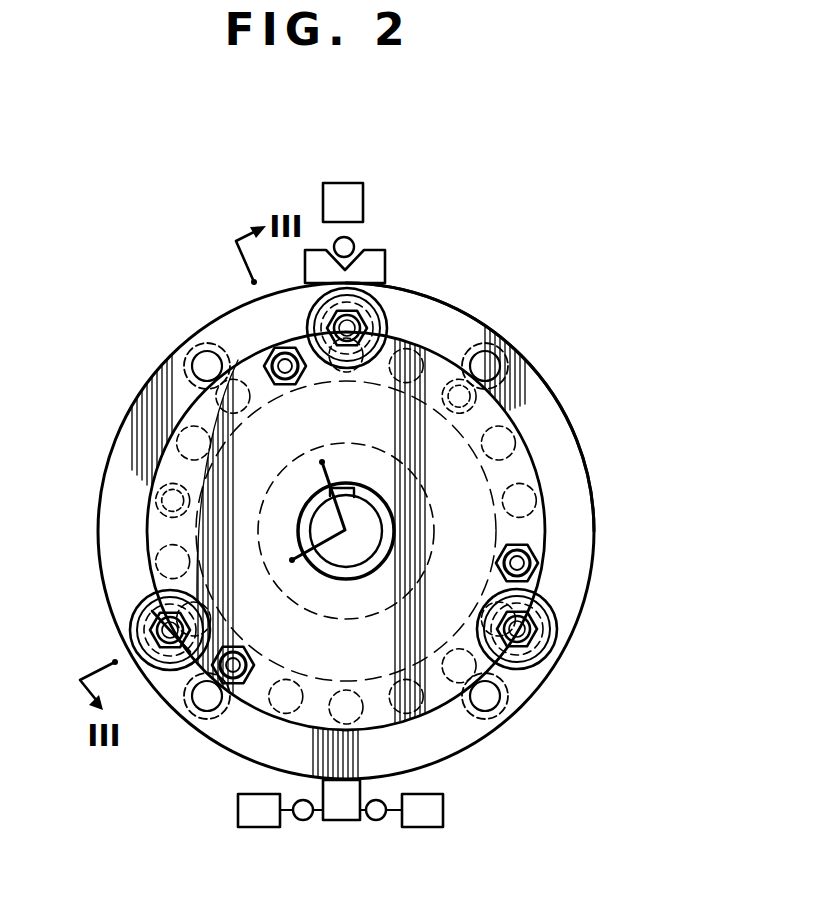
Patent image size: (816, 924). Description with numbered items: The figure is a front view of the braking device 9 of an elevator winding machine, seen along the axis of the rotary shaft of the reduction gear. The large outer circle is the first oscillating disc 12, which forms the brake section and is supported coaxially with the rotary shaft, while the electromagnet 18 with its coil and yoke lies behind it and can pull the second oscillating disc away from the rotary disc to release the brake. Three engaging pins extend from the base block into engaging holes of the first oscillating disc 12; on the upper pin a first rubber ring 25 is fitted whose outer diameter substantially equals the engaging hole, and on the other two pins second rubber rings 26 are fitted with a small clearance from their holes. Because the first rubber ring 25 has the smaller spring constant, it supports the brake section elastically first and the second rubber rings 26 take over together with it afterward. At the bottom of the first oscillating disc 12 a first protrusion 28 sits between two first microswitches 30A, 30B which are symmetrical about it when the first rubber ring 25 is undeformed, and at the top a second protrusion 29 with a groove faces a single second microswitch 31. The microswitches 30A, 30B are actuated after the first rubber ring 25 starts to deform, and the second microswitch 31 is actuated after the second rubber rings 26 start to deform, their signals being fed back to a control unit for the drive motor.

The braking device 9 is at (562, 405).
The first oscillating disc 12 is at (594, 546).
The electromagnet 18 is at (541, 483).
The first rubber ring 25 is at (378, 315).
The second rubber rings 26 is at (143, 617).
The first protrusion 28 is at (340, 822).
The second protrusion 29 is at (384, 252).
The first microswitch 30A is at (238, 811).
The first microswitch 30B is at (443, 810).
The second microswitch 31 is at (343, 183).